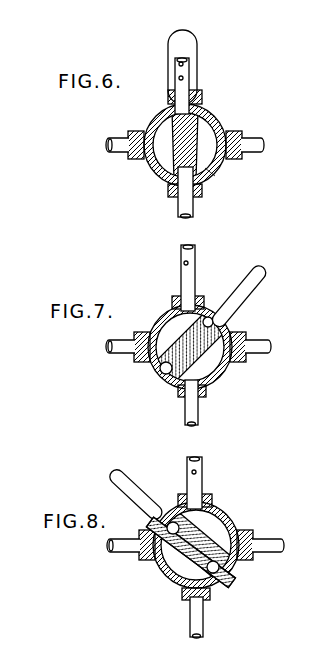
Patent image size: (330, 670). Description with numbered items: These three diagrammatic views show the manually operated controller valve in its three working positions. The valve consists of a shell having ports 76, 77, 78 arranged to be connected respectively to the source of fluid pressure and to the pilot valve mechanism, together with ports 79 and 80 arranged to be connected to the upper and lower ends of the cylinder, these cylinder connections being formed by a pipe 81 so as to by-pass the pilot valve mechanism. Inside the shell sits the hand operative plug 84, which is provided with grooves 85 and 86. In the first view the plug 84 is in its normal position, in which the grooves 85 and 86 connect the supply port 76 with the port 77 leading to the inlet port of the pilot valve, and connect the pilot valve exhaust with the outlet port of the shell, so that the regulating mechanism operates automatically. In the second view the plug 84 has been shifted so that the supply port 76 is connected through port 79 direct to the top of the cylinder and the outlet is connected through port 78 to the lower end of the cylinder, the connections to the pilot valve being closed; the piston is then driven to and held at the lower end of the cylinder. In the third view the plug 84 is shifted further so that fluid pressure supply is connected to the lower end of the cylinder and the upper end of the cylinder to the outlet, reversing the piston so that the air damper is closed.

In FIG. 6, the supply port 76 is at (179, 86).
In FIG. 7, the supply port 76 is at (181, 293).
In FIG. 8, the supply port 76 is at (198, 486).
In FIG. 6, the port 77 is at (203, 96).
In FIG. 7, the port 77 is at (190, 346).
In FIG. 8, the port 77 is at (209, 500).
In FIG. 6, the port 78 is at (204, 190).
In FIG. 7, the port 78 is at (198, 402).
In FIG. 8, the port 78 is at (206, 598).
In FIG. 6, the port 79 is at (134, 134).
In FIG. 7, the port 79 is at (126, 352).
In FIG. 8, the port 79 is at (125, 553).
In FIG. 6, the port 80 is at (241, 138).
In FIG. 7, the port 80 is at (248, 340).
In FIG. 8, the port 80 is at (266, 553).
In FIG. 6, the pipe 81 is at (178, 70).
In FIG. 7, the pipe 81 is at (181, 258).
In FIG. 8, the pipe 81 is at (203, 462).
In FIG. 6, the hand operative plug 84 is at (152, 168).
In FIG. 7, the hand operative plug 84 is at (205, 355).
In FIG. 8, the hand operative plug 84 is at (205, 540).
In FIG. 7, the groove 85 is at (209, 317).
In FIG. 8, the groove 85 is at (176, 520).
In FIG. 6, the groove 86 is at (210, 172).
In FIG. 7, the groove 86 is at (163, 377).
In FIG. 8, the groove 86 is at (230, 577).